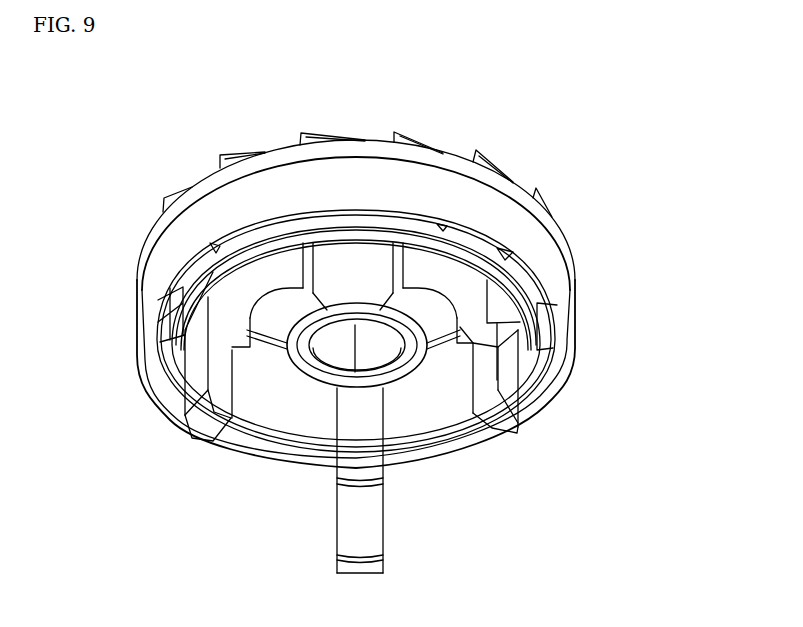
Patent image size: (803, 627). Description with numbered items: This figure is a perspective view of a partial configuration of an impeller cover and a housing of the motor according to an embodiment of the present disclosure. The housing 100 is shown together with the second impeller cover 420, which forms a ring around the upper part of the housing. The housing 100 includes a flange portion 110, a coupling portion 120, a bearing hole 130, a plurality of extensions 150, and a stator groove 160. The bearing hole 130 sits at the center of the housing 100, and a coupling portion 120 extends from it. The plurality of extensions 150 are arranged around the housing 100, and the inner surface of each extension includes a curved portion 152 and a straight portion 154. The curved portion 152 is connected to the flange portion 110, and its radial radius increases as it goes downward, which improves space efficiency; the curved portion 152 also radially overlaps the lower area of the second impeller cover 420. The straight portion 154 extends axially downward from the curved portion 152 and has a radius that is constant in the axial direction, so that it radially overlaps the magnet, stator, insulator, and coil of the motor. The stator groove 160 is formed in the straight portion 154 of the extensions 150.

The housing 100 is at (334, 539).
The flange portion 110 is at (417, 263).
The coupling portion 120 is at (355, 270).
The bearing hole 130 is at (335, 347).
The extensions 150 is at (463, 330).
The curved portion 152 is at (427, 307).
The straight portion 154 is at (462, 333).
The stator groove 160 is at (458, 400).
The second impeller cover 420 is at (135, 273).